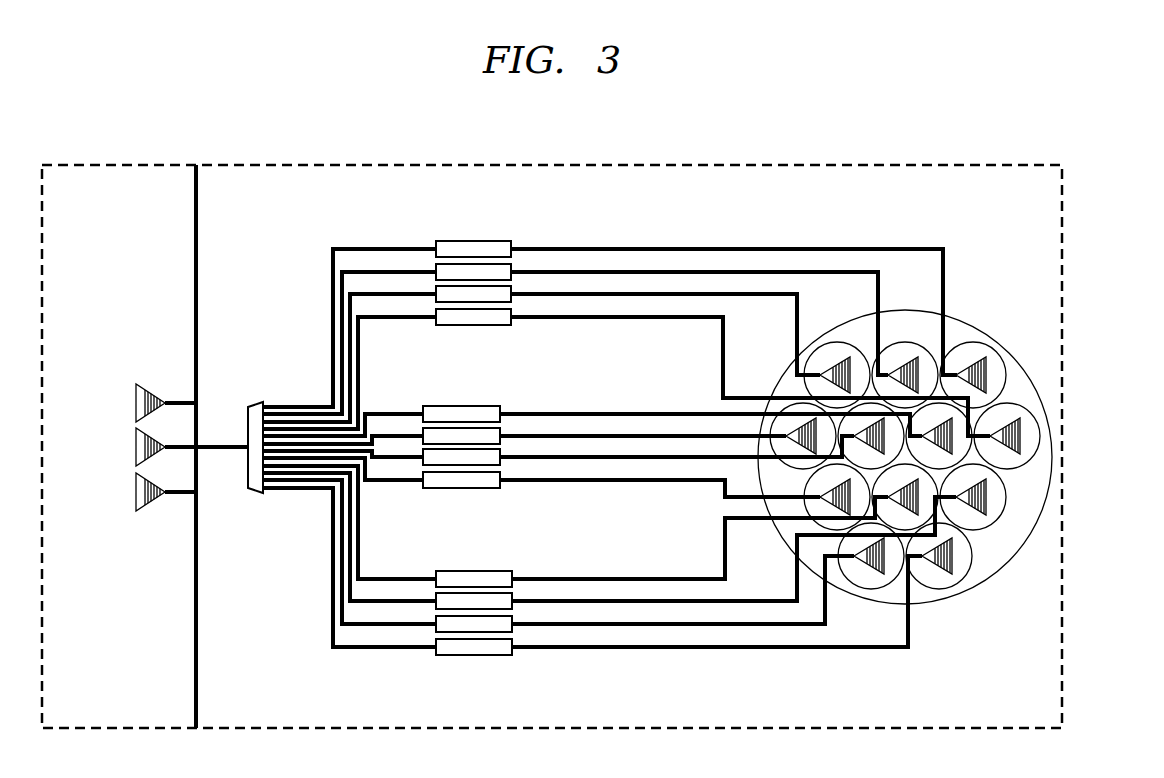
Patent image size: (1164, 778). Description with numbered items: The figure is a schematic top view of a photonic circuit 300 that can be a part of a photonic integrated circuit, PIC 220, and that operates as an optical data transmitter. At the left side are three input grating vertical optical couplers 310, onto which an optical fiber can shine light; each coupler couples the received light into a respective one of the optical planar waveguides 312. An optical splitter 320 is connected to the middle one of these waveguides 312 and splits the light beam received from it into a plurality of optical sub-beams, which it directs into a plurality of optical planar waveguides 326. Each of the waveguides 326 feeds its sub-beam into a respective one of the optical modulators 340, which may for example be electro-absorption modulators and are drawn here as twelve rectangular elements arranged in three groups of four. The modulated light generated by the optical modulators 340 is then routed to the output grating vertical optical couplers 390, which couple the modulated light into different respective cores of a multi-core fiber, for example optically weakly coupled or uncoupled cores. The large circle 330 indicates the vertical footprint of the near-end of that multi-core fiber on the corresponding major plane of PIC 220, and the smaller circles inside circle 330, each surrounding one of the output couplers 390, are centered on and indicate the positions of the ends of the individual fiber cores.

The PIC 220 is at (552, 426).
The photonic circuit 300 is at (552, 99).
The input grating vertical optical couplers 310 is at (115, 446).
The optical planar waveguides 312 is at (192, 446).
The optical splitter 320 is at (254, 416).
The optical planar waveguides 326 is at (349, 448).
The circle 330 is at (905, 436).
The optical modulators 340 is at (706, 447).
The output grating vertical optical couplers 390 is at (948, 478).